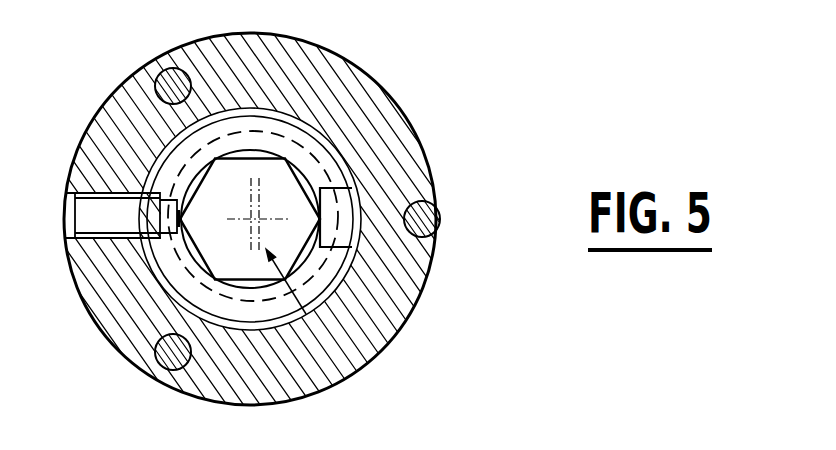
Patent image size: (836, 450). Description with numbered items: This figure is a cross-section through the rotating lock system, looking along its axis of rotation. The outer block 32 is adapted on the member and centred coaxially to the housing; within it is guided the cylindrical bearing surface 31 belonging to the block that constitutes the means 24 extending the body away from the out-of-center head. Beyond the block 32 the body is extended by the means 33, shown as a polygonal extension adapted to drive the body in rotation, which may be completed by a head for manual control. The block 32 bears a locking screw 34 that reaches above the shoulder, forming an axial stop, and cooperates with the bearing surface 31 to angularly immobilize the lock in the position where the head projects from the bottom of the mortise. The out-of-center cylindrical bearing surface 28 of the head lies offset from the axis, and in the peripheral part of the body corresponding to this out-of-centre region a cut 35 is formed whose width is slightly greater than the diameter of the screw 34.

The means 24 is at (361, 367).
The cylindrical bearing surface 28 is at (331, 301).
The cylindrical bearing surface 31 is at (281, 153).
The block 32 is at (411, 124).
The means 33 is at (217, 249).
The screw 34 is at (100, 223).
The cut 35 is at (349, 203).